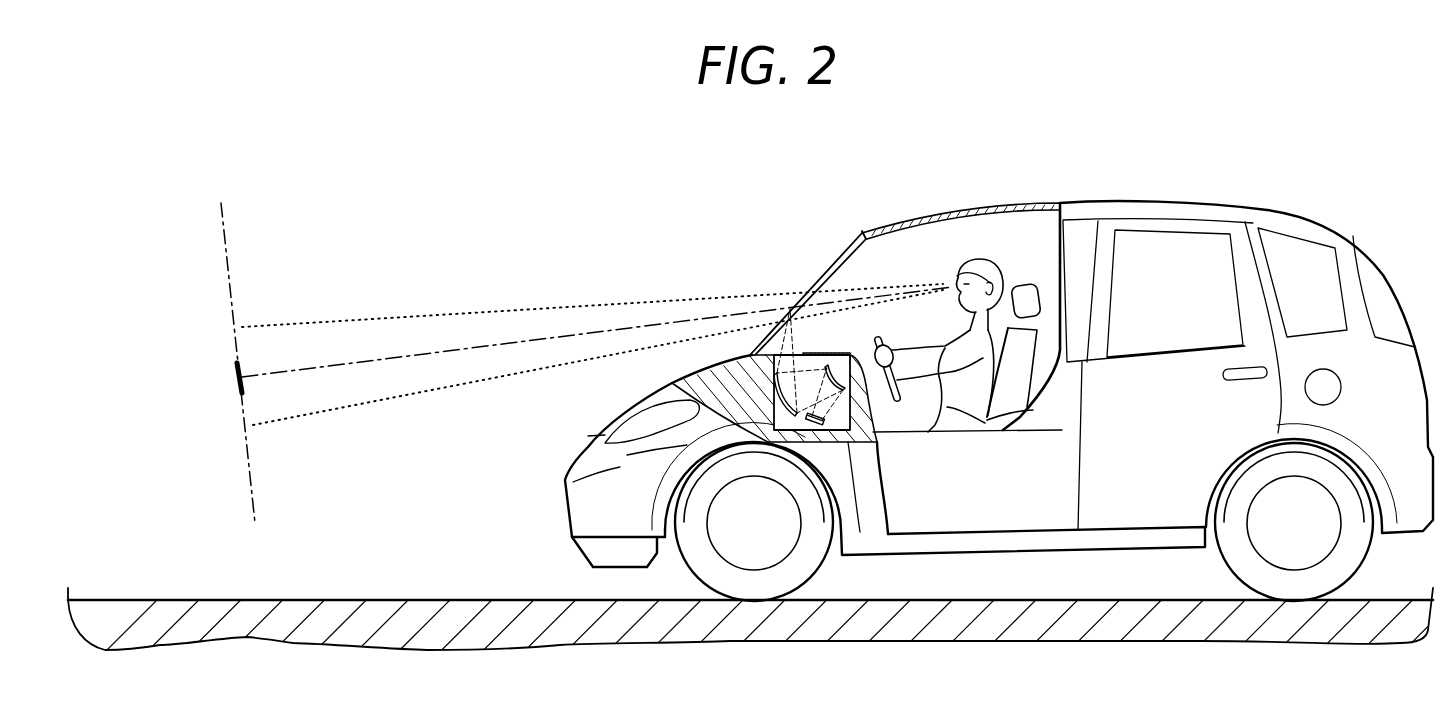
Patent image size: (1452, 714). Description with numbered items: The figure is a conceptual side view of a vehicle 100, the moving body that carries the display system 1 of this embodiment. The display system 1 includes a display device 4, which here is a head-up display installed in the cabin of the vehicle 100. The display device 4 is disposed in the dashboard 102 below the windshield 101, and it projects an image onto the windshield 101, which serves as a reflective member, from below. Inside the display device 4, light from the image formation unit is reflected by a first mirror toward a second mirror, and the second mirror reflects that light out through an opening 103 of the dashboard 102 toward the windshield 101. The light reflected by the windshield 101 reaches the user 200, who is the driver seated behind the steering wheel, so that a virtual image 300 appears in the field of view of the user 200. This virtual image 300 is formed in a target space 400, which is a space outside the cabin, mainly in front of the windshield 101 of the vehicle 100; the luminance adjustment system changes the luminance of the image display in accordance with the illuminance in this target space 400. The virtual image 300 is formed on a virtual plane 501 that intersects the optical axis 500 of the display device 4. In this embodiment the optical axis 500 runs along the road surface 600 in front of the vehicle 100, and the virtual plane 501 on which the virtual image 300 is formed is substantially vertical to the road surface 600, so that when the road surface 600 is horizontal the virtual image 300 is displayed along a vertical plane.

The display system 1 is at (846, 417).
The display device 4 is at (838, 412).
The vehicle 100 is at (970, 376).
The windshield 101 is at (822, 270).
The dashboard 102 is at (870, 447).
The opening 103 is at (801, 354).
The user 200 is at (1010, 246).
The virtual image 300 is at (243, 372).
The target space 400 is at (423, 317).
The optical axis 500 is at (371, 362).
The virtual plane 501 is at (223, 258).
The road surface 600 is at (427, 599).